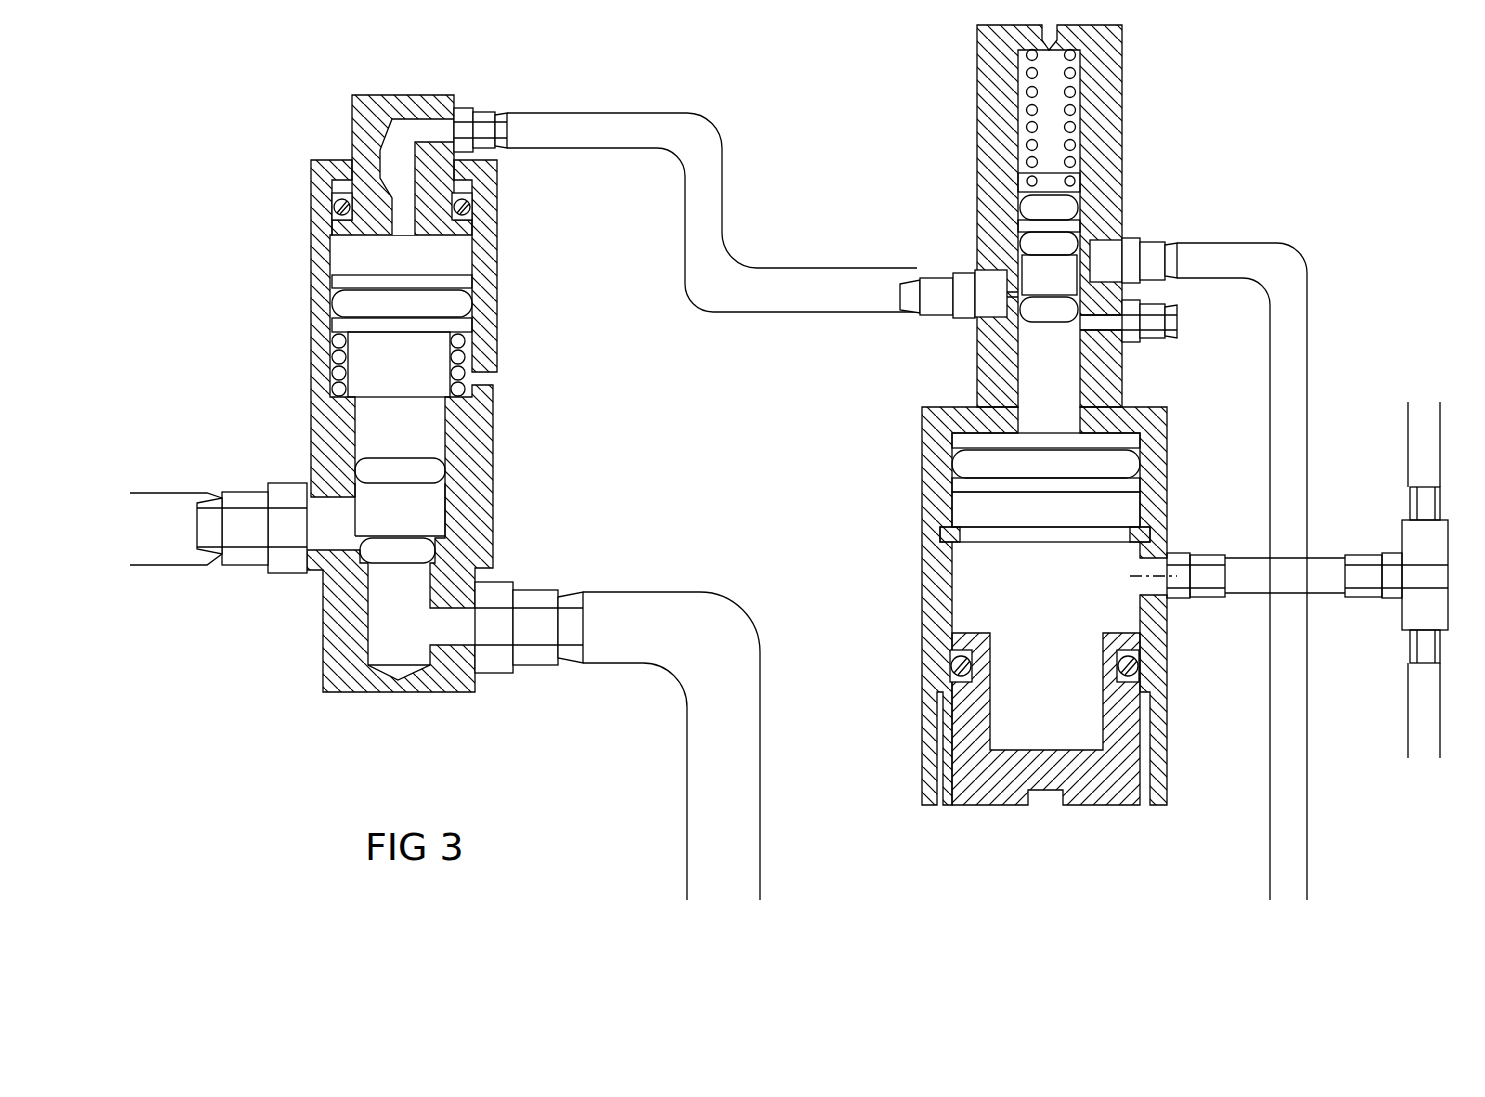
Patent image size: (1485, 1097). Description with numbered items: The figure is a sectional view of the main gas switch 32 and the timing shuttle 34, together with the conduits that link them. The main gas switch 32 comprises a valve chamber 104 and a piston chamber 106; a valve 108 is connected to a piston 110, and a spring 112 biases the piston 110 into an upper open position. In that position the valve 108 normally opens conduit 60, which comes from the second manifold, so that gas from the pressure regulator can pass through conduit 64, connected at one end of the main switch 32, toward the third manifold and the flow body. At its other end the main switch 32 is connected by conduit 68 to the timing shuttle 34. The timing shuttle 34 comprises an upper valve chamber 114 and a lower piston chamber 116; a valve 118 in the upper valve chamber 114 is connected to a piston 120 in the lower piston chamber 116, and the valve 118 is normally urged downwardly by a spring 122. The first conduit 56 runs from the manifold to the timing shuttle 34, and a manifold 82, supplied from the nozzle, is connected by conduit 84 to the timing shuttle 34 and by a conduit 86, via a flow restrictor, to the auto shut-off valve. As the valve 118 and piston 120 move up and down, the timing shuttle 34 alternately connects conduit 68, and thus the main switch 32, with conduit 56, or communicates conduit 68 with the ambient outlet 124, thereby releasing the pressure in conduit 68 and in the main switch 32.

The main gas switch 32 is at (411, 393).
The timing shuttle 34 is at (1024, 415).
The first conduit 56 is at (1322, 288).
The conduit 60 is at (167, 513).
The conduit 64 is at (716, 750).
The conduit 68 is at (710, 187).
The manifold 82 is at (1418, 742).
The conduit 84 is at (1255, 582).
The conduit 86 is at (1425, 438).
The valve chamber 104 is at (483, 470).
The piston chamber 106 is at (496, 302).
The valve 108 is at (420, 513).
The piston 110 is at (385, 284).
The spring 112 is at (340, 372).
The upper valve chamber 114 is at (1108, 175).
The lower piston chamber 116 is at (930, 585).
The valve 118 is at (1040, 277).
The piston 120 is at (1008, 488).
The spring 122 is at (1031, 110).
The ambient outlet 124 is at (1145, 325).